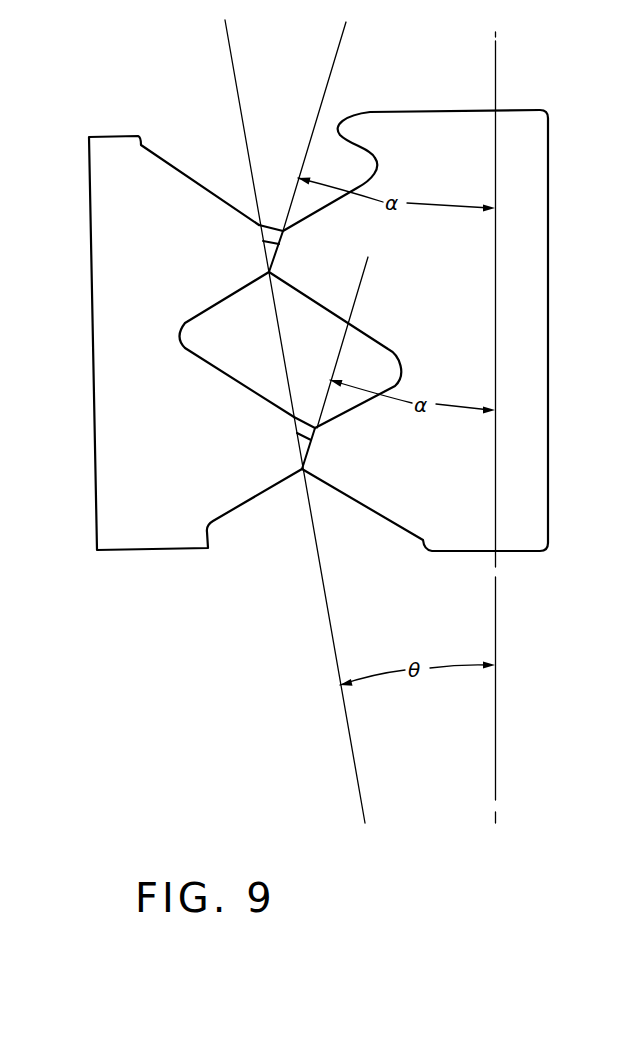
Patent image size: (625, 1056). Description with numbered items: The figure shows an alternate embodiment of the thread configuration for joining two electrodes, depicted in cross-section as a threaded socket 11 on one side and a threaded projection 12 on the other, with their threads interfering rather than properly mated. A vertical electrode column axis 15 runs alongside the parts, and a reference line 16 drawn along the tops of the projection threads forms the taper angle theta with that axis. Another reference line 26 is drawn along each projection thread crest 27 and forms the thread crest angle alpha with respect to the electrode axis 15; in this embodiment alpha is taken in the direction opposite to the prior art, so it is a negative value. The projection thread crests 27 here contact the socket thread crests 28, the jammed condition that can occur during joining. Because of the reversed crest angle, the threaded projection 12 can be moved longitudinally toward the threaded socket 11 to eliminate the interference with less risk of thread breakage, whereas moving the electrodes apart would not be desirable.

The threaded socket 11 is at (99, 268).
The threaded projection 12 is at (415, 113).
The electrode column axis 15 is at (497, 620).
The reference line 16 is at (334, 656).
The reference line 26 is at (330, 74).
The projection thread crest 27 is at (284, 252).
The socket thread crest 28 is at (263, 241).